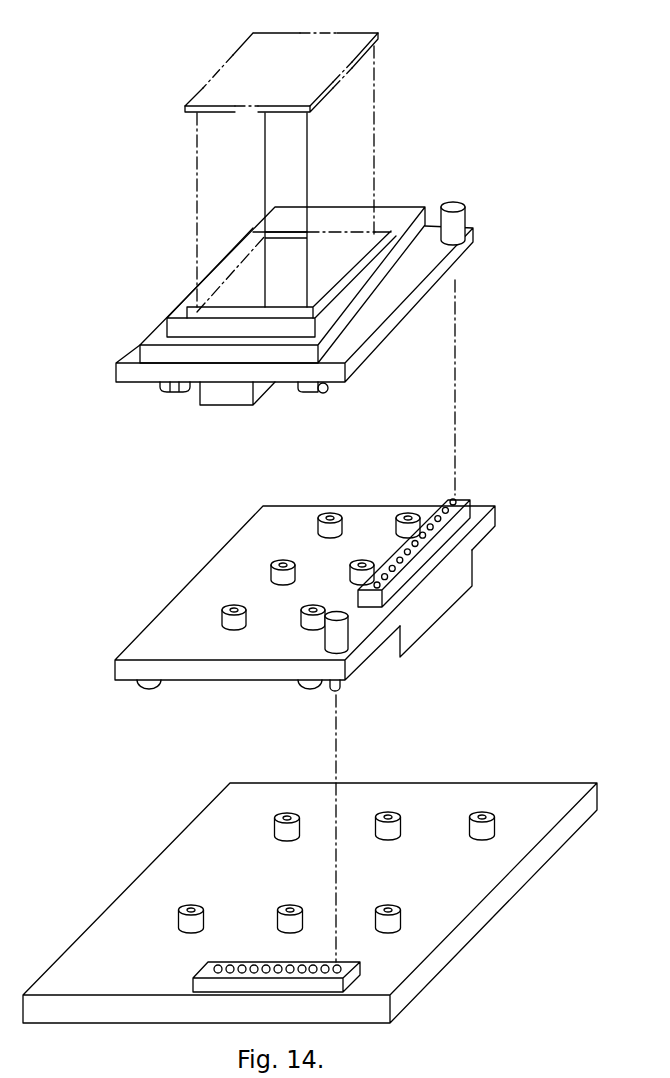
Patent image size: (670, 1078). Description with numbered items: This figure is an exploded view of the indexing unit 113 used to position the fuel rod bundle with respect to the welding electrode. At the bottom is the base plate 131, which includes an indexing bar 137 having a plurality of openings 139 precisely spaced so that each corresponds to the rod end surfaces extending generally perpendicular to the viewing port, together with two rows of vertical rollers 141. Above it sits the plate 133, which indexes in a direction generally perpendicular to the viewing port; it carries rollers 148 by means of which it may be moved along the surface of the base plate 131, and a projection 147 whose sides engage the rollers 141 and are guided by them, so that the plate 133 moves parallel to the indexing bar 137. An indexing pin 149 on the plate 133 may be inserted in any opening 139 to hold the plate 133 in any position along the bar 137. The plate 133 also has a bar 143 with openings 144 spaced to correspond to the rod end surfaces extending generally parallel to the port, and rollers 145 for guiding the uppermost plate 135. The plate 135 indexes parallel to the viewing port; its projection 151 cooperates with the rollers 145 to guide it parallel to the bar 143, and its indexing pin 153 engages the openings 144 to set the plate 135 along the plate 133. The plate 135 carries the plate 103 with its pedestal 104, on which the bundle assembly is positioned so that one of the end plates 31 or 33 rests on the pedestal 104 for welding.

The end plate 33 is at (335, 33).
The end plate 31 is at (400, 212).
The plate 103 is at (367, 308).
The pedestal 104 is at (168, 326).
The plate 135 is at (127, 358).
The indexing pin 153 is at (471, 216).
The rollers 148 is at (173, 393).
The projection 151 is at (231, 398).
The indexing unit 113 is at (299, 587).
The plate 133 is at (139, 646).
The rollers 145 is at (224, 610).
The indexing pin 149 is at (326, 640).
The bar 143 is at (465, 511).
The openings 144 is at (456, 505).
The projection 147 is at (405, 646).
The base plate 131 is at (495, 873).
The vertical rollers 141 is at (397, 813).
The indexing bar 137 is at (200, 987).
The openings 139 is at (303, 963).